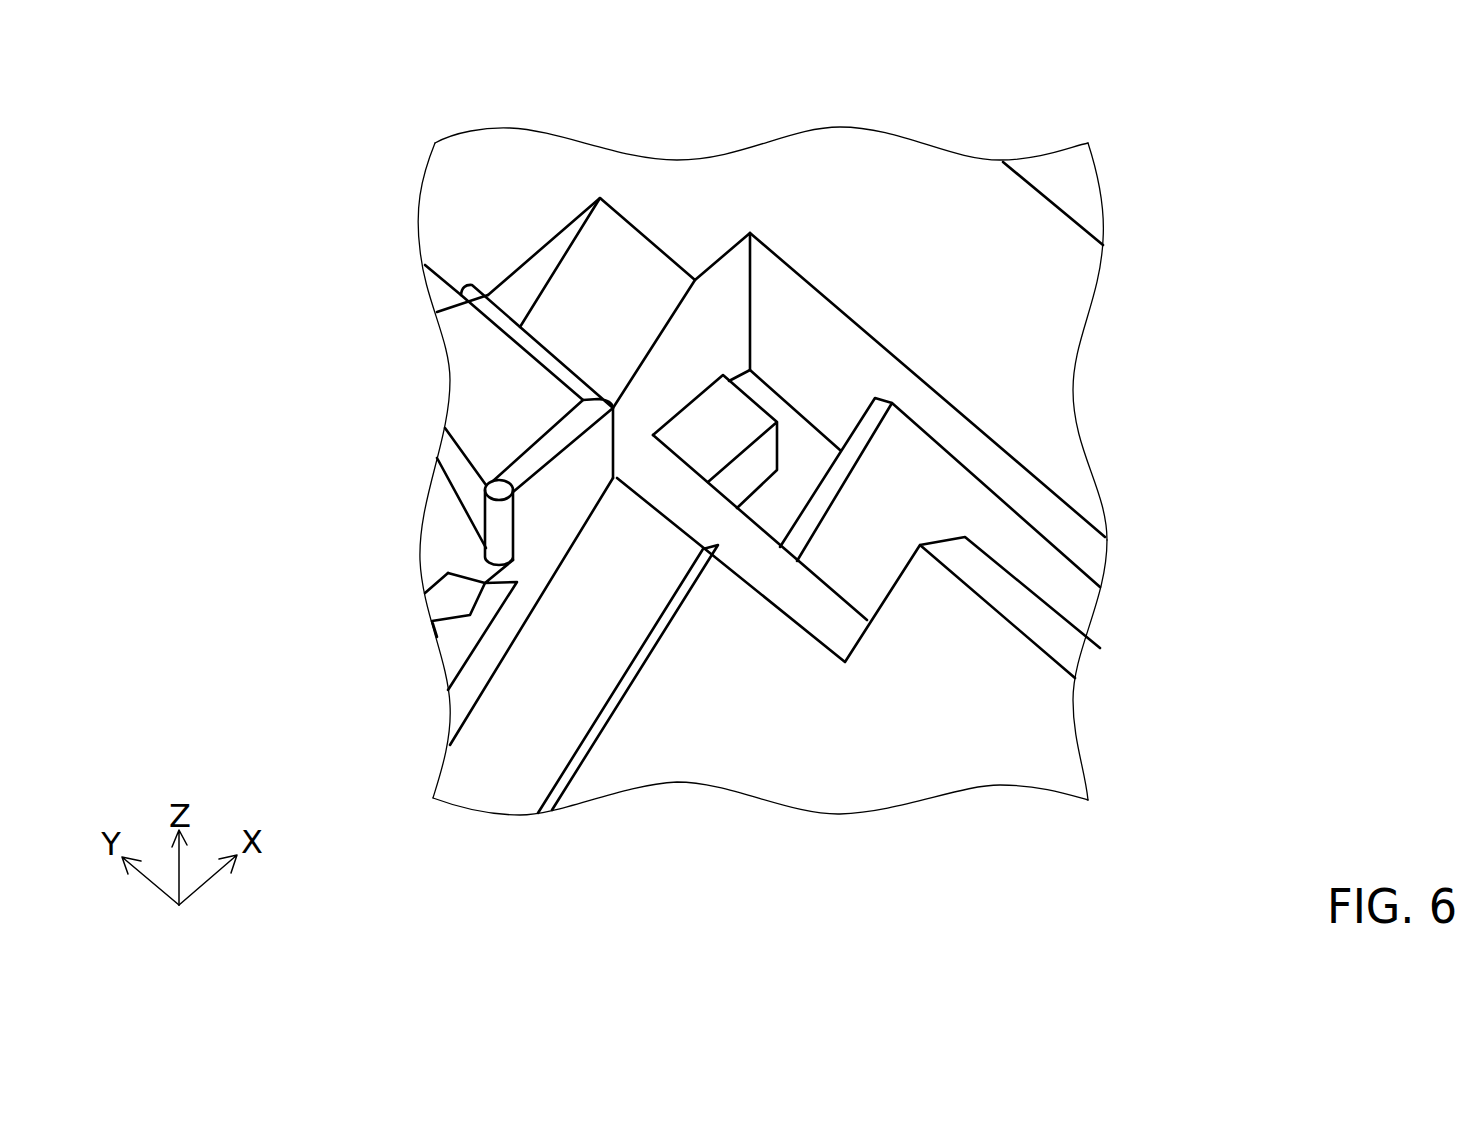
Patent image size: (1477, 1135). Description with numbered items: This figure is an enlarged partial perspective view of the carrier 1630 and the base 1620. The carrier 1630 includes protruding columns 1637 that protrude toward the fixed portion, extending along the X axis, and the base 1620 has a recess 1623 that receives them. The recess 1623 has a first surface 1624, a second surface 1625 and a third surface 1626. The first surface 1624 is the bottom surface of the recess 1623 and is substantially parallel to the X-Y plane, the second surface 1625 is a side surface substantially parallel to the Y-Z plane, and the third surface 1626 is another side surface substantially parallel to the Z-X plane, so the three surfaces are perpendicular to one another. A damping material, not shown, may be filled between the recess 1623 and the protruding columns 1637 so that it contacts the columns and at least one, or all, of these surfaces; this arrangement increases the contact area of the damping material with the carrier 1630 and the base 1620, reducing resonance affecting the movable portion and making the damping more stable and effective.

The base 1620 is at (969, 233).
The recess 1623 is at (157, 230).
The first surface 1624 is at (808, 470).
The second surface 1625 is at (812, 357).
The third surface 1626 is at (722, 305).
The carrier 1630 is at (880, 772).
The protruding columns 1637 is at (713, 432).